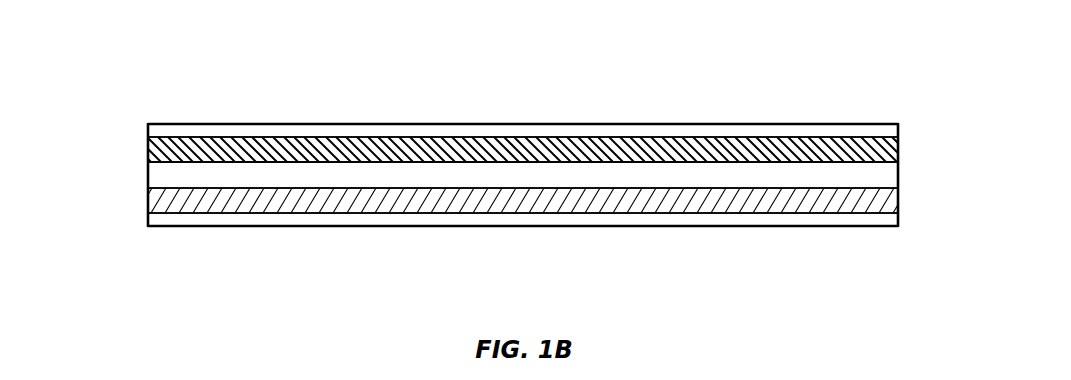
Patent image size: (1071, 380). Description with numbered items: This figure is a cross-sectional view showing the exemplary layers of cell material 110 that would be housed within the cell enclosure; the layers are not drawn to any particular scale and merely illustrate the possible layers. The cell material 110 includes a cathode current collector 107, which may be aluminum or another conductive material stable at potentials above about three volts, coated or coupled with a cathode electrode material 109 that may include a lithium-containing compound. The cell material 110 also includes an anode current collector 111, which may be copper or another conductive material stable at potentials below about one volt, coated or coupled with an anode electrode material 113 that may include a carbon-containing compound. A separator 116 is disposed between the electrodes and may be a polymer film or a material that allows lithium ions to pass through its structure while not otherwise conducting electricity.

The cathode current collector 107 is at (355, 227).
The cathode electrode material 109 is at (148, 198).
The cell material 110 is at (148, 162).
The anode current collector 111 is at (748, 124).
The anode electrode material 113 is at (898, 147).
The separator 116 is at (898, 183).